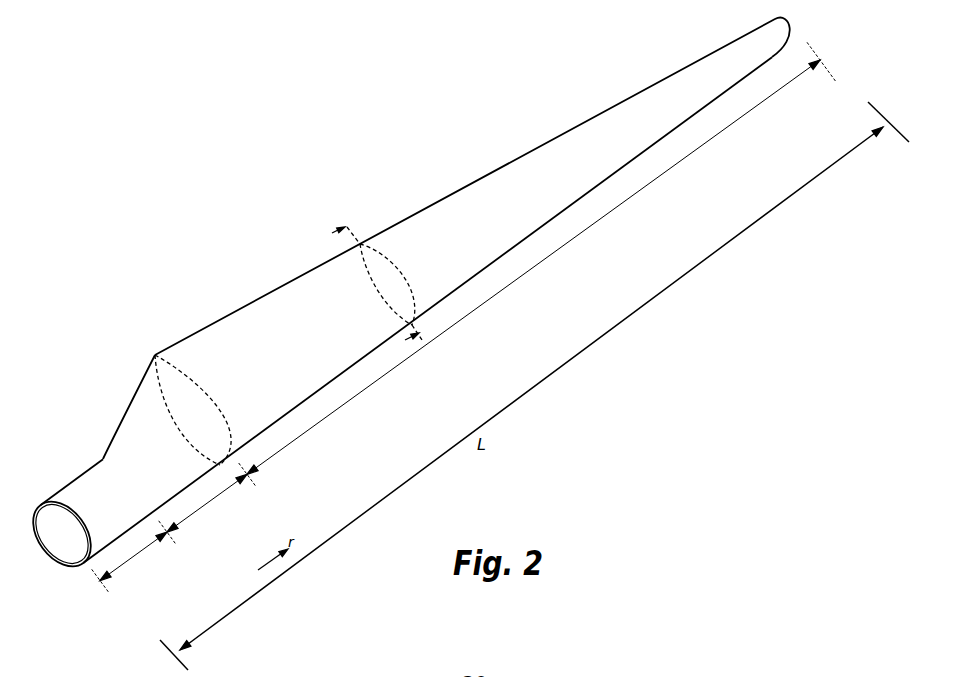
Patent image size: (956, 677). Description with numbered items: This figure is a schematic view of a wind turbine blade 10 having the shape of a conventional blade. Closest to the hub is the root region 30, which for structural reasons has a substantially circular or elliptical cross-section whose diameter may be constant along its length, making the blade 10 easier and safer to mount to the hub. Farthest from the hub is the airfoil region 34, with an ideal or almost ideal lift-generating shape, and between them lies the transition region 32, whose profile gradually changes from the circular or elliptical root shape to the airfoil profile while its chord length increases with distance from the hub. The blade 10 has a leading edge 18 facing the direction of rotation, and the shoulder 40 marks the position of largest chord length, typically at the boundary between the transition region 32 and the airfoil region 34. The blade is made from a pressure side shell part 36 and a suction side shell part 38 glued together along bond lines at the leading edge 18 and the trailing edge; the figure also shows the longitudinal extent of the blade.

The wind turbine blade 10 is at (278, 191).
The leading edge 18 is at (562, 212).
The root region 30 is at (141, 553).
The transition region 32 is at (210, 500).
The airfoil region 34 is at (478, 307).
The pressure side shell part 36 is at (62, 503).
The suction side shell part 38 is at (40, 508).
The shoulder 40 is at (155, 355).